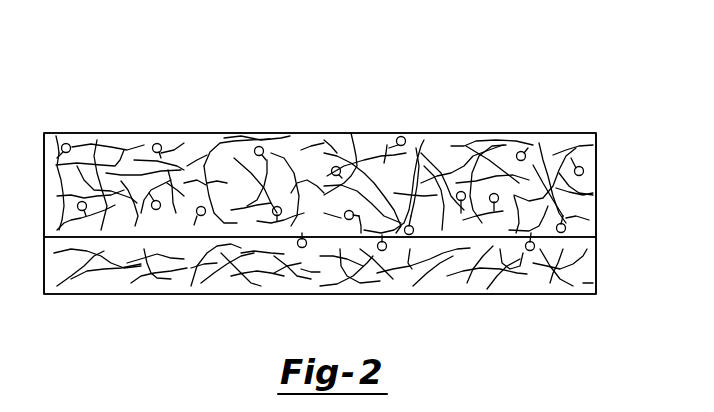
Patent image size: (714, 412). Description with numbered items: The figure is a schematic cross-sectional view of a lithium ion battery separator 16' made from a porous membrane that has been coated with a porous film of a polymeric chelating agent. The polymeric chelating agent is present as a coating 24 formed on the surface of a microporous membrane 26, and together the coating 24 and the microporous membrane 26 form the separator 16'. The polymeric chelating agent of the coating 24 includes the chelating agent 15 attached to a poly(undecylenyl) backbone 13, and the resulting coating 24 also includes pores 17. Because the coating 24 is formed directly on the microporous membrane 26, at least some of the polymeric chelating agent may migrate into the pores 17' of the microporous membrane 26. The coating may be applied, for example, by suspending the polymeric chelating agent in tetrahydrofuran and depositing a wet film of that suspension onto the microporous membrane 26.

The poly(undecylenyl) backbone 13 is at (352, 133).
The chelating agent 15 is at (161, 146).
The lithium ion battery separator 16' is at (337, 165).
The pores 17 is at (58, 106).
The pores 17' is at (362, 266).
The coating 24 is at (447, 133).
The microporous membrane 26 is at (532, 295).